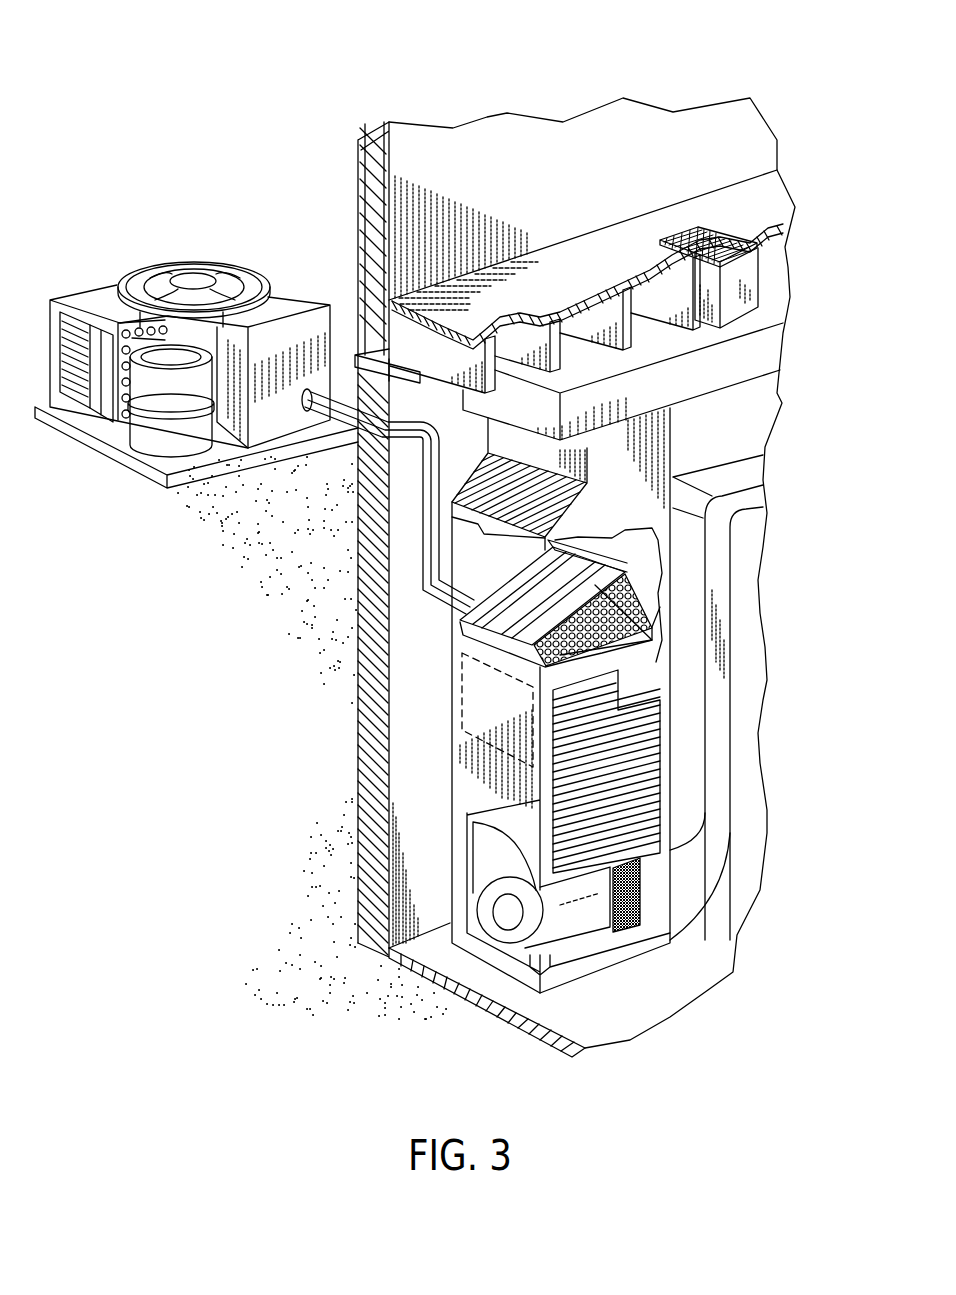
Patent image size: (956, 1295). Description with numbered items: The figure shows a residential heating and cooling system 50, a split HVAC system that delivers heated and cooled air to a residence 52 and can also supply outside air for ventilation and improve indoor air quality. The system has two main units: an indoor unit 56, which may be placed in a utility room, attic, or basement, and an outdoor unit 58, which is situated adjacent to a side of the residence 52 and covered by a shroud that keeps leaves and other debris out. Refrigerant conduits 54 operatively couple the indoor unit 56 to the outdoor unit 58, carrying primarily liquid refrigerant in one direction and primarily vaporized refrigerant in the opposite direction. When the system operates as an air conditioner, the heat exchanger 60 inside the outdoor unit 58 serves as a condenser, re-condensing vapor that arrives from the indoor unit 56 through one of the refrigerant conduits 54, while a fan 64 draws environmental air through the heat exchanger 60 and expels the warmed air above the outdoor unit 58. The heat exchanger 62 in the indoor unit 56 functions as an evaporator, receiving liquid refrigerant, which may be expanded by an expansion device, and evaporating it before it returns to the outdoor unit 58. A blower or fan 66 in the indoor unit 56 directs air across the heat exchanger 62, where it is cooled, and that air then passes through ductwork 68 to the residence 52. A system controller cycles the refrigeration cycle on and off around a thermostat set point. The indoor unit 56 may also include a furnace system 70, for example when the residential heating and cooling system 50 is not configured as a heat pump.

The residential heating and cooling system 50 is at (188, 92).
The residence 52 is at (492, 143).
The refrigerant conduits 54 is at (422, 512).
The indoor unit 56 is at (431, 754).
The outdoor unit 58 is at (151, 253).
The heat exchanger 60 is at (121, 333).
The heat exchanger 62 is at (500, 632).
The fan 64 is at (205, 274).
The blower or fan 66 is at (505, 935).
The ductwork 68 is at (715, 363).
The furnace system 70 is at (463, 703).